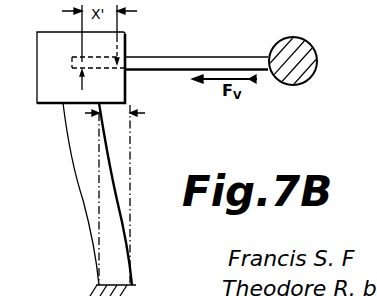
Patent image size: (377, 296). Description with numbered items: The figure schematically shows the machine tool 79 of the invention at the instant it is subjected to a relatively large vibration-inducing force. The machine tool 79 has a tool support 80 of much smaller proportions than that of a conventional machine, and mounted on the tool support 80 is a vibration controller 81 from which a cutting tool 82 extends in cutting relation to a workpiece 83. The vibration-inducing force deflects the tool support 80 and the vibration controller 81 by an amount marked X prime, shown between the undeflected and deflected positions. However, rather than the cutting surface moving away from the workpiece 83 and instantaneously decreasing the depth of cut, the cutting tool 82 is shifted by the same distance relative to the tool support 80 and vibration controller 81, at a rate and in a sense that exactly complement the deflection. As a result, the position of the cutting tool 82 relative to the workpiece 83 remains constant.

The machine tool 79 is at (44, 135).
The tool support 80 is at (108, 153).
The vibration controller 81 is at (37, 83).
The cutting tool 82 is at (184, 62).
The workpiece 83 is at (317, 62).